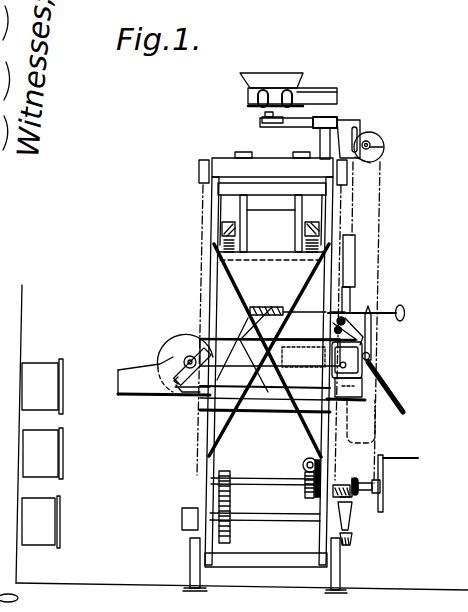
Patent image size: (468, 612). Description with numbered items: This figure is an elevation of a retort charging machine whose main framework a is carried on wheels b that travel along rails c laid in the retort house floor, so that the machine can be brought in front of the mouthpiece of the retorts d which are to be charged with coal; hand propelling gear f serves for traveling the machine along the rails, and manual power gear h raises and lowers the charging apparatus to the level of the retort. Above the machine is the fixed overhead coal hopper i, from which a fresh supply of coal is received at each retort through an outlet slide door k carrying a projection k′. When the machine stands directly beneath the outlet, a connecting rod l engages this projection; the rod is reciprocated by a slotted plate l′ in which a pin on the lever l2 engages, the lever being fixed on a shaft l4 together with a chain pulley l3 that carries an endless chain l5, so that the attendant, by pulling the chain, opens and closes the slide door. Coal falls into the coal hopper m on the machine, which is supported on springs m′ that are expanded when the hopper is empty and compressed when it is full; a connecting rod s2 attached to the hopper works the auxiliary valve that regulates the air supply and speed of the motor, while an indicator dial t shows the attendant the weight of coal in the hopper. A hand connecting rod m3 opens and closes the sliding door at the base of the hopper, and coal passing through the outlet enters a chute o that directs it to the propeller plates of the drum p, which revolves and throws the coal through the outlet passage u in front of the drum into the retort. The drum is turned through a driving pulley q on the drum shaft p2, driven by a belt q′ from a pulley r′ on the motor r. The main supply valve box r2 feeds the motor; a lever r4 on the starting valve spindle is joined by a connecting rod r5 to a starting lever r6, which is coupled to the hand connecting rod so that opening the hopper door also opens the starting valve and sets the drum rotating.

The main framework a is at (237, 290).
The wheels b is at (190, 552).
The rails c is at (265, 597).
The mouthpiece of the retorts d is at (42, 453).
The hand propelling gear f is at (356, 498).
The manual power gear h is at (302, 464).
The fixed overhead coal hopper i is at (276, 82).
The outlet slide door k is at (258, 105).
The projection k′ is at (262, 120).
The connecting rod l is at (299, 124).
The slotted plate l′ is at (363, 127).
The lever l2 is at (378, 160).
The chain pulley l3 is at (383, 144).
The shaft l4 is at (377, 150).
The endless chain l5 is at (380, 223).
The coal hopper m is at (273, 287).
The springs m′ is at (302, 240).
The hand connecting rod m3 is at (366, 313).
The chute o is at (270, 343).
The drum p is at (180, 344).
The drum shaft p2 is at (170, 389).
The driving pulley q is at (183, 342).
The belt q′ is at (268, 392).
The motor r is at (346, 371).
The main supply valve box r2 is at (330, 333).
The lever r4 is at (333, 322).
The connecting rod r5 is at (377, 325).
The starting lever r6 is at (377, 343).
The pulley r′ is at (384, 380).
The connecting rod s2 is at (369, 306).
The indicator dial t is at (355, 258).
The outlet passage u is at (164, 376).